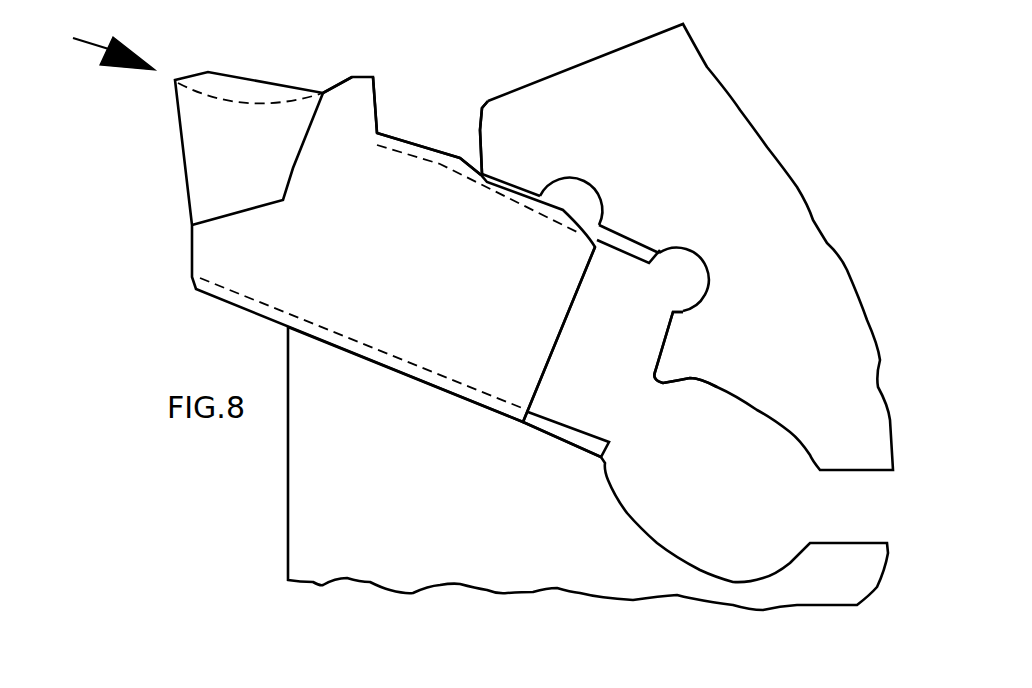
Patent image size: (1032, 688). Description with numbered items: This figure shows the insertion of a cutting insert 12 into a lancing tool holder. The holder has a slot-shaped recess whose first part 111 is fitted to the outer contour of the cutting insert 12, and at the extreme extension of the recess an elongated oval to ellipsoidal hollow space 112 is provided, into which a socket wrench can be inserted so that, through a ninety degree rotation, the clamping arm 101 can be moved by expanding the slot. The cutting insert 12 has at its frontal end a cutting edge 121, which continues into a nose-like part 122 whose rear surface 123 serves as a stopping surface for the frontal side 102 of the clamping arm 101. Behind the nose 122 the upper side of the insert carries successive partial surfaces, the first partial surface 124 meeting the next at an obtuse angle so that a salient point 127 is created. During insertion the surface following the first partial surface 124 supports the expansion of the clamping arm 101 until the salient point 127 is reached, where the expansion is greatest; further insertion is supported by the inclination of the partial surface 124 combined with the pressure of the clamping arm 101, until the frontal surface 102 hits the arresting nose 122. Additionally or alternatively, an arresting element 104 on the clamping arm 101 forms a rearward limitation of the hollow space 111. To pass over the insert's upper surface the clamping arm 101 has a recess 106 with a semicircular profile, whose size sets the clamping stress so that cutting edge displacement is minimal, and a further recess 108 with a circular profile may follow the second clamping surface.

The cutting insert 12 is at (412, 309).
The clamping arm 101 is at (605, 131).
The frontal side of the clamping arm 102 is at (483, 104).
The arresting element 104 is at (667, 350).
The recess 106 is at (578, 207).
The further recess 108 is at (700, 282).
The first part of the recess 111 is at (627, 345).
The hollow space 112 is at (740, 540).
The cutting edge 121 is at (94, 36).
The nose-like part 122 is at (347, 100).
The rear surface 123 is at (380, 93).
The first partial surface 124 is at (408, 150).
The salient point 127 is at (460, 157).